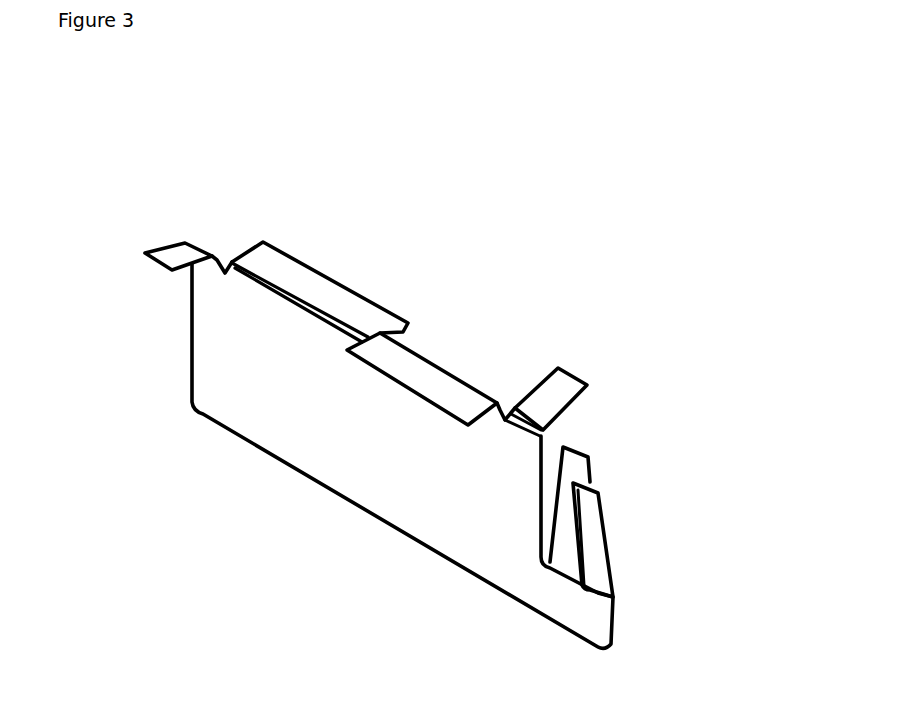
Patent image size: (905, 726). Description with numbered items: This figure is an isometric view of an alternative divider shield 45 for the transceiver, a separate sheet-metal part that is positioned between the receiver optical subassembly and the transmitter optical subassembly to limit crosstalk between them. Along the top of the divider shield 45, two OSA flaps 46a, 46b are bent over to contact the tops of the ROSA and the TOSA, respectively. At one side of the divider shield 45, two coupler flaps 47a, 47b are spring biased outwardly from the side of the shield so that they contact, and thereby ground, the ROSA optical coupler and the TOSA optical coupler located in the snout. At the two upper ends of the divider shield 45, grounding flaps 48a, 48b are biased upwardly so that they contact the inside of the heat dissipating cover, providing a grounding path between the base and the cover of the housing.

The divider shield 45 is at (273, 395).
The OSA flap 46a is at (430, 380).
The OSA flap 46b is at (272, 257).
The coupler flap 47a is at (588, 515).
The coupler flap 47b is at (590, 463).
The grounding flap 48a is at (165, 243).
The grounding flap 48b is at (578, 382).